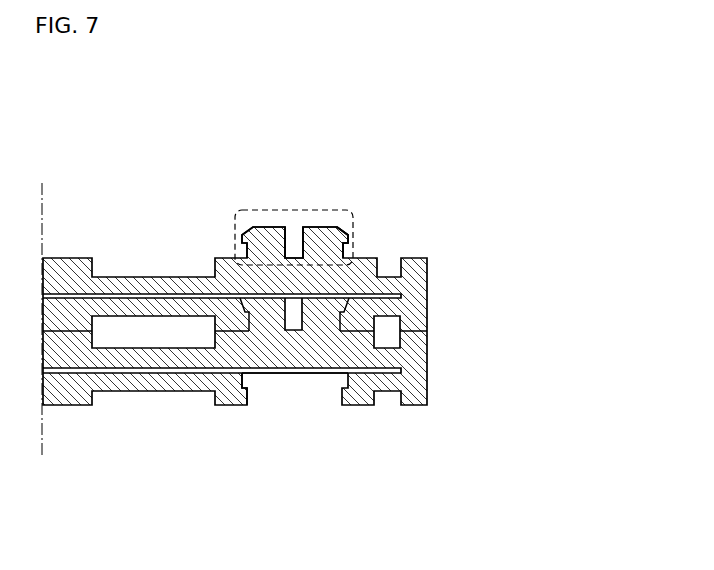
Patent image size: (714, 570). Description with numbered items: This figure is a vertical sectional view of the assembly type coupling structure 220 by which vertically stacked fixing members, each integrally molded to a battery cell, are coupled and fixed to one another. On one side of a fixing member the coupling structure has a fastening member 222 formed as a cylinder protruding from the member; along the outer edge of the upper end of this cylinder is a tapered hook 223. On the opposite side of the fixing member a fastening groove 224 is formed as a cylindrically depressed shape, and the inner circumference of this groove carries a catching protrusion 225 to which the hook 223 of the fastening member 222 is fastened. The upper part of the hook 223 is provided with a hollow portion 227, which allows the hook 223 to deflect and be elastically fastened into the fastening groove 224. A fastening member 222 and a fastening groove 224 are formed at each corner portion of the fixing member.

The assembly type coupling structure 220 is at (427, 272).
The fastening member 222 is at (330, 197).
The hook 223 is at (343, 235).
The fastening groove 224 is at (322, 402).
The catching protrusion 225 is at (250, 380).
The hollow portion 227 is at (295, 247).